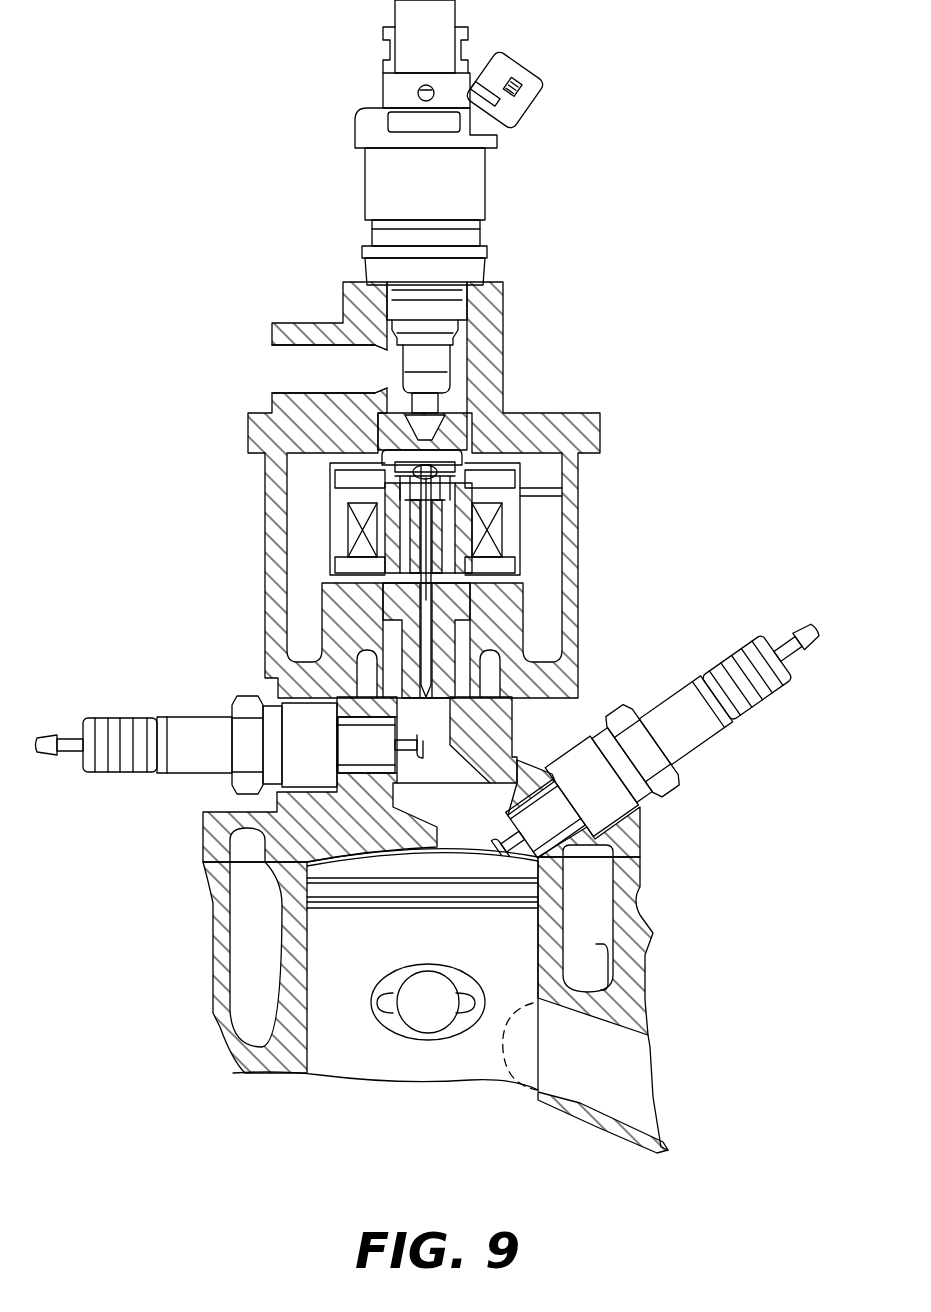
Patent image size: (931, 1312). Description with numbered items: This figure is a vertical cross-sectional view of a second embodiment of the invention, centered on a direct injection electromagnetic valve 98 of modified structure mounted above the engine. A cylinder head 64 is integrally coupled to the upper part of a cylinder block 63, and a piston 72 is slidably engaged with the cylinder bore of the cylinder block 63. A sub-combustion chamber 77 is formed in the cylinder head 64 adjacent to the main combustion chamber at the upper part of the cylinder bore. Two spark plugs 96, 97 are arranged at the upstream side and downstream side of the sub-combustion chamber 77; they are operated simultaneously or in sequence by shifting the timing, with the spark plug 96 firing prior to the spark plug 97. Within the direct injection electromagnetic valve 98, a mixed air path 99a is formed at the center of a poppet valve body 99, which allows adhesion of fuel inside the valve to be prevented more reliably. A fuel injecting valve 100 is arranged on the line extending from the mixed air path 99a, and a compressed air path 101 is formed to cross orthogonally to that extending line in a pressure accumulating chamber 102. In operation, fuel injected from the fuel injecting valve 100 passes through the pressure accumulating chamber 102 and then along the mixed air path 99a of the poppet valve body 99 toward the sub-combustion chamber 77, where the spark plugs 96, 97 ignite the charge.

The fuel injecting valve 100 is at (470, 193).
The compressed air path 101 is at (297, 363).
The pressure accumulating chamber 102 is at (425, 366).
The direct injection electromagnetic valve 98 is at (543, 542).
The poppet valve body 99 is at (435, 658).
The mixed air path 99a is at (423, 605).
The spark plug 96 is at (193, 737).
The spark plug 97 is at (685, 707).
The sub-combustion chamber 77 is at (475, 824).
The cylinder head 64 is at (222, 827).
The cylinder block 63 is at (210, 955).
The piston 72 is at (515, 965).